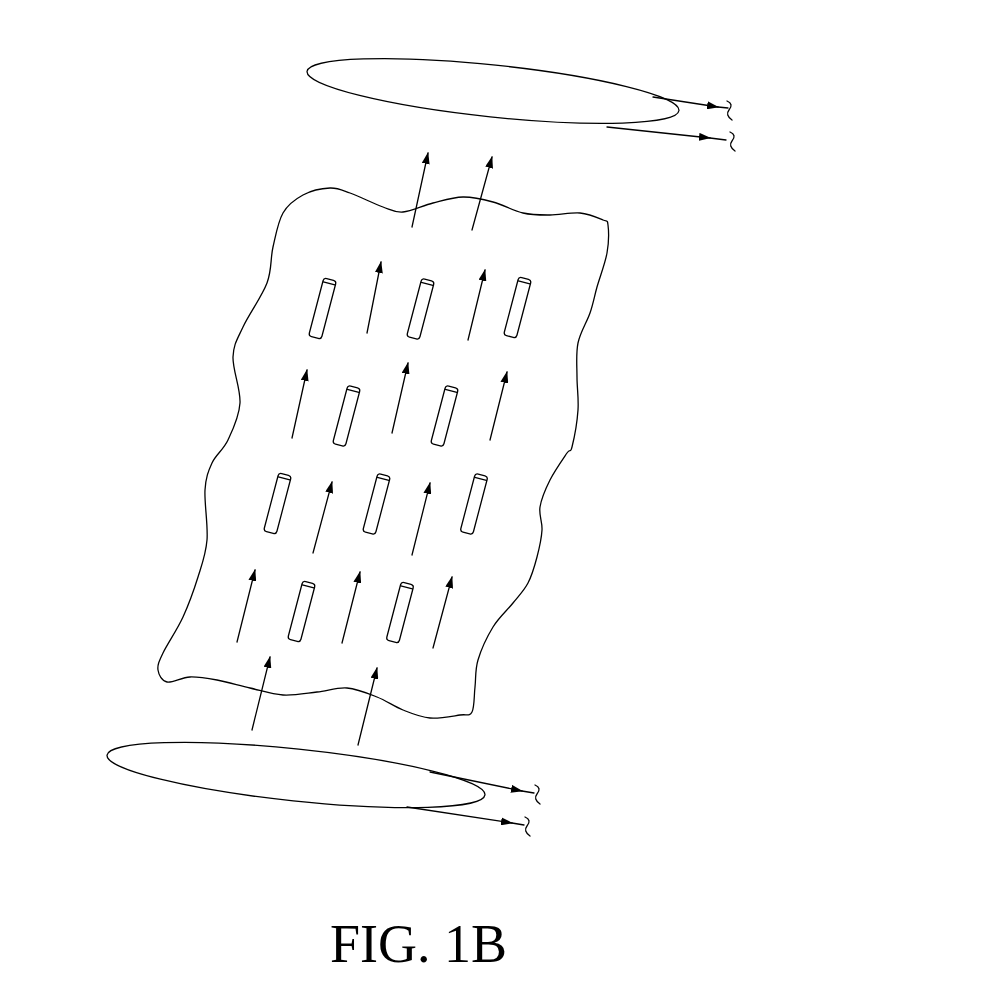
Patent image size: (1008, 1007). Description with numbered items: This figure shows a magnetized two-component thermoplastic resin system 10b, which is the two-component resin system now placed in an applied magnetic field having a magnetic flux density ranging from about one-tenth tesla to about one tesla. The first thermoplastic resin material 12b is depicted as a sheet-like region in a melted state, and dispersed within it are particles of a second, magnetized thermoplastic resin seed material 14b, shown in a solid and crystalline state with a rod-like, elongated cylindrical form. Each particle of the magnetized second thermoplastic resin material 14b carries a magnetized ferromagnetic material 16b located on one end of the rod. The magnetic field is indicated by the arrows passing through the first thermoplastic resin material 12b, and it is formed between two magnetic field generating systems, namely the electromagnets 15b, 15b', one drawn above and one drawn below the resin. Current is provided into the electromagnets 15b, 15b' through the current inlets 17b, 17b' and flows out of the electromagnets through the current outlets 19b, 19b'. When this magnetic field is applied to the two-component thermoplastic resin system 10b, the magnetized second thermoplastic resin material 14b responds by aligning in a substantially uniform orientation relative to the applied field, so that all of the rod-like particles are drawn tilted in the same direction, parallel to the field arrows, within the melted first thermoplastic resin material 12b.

The magnetized two-component thermoplastic resin system 10b is at (626, 318).
The first thermoplastic resin material 12b is at (536, 245).
The magnetized second thermoplastic resin material 14b is at (317, 310).
The magnetized ferromagnetic material 16b is at (335, 252).
The electromagnet 15b is at (492, 73).
The current inlet 17b is at (671, 177).
The current outlet 19b is at (711, 75).
The electromagnet 15b' is at (268, 774).
The current inlet 17b' is at (524, 818).
The current outlet 19b' is at (498, 747).